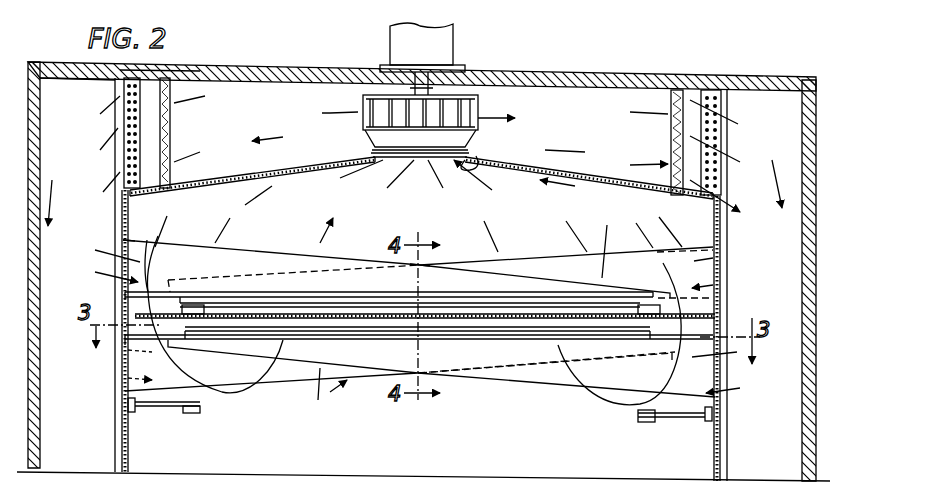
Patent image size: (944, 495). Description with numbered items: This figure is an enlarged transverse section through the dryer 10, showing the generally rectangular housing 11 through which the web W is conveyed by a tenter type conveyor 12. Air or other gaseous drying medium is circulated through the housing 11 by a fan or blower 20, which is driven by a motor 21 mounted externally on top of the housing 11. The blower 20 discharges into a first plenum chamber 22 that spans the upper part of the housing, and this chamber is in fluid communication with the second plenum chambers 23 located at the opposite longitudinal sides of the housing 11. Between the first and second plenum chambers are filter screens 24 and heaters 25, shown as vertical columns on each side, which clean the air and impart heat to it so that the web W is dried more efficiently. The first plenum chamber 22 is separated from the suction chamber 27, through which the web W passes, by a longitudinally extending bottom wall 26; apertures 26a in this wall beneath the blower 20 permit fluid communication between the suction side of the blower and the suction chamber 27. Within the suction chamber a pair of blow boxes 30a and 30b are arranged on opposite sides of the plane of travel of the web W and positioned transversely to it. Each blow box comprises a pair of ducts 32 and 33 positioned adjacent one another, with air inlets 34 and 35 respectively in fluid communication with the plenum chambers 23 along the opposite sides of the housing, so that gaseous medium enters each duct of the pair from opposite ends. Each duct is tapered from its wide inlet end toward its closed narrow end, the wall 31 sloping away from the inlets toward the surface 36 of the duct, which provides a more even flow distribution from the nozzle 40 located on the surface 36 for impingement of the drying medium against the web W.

The dryer 10 is at (740, 72).
The housing 11 is at (590, 72).
The tenter type conveyor 12 is at (180, 292).
The fan or blower 20 is at (365, 122).
The motor 21 is at (430, 53).
The first plenum chamber 22 is at (255, 92).
The second plenum chamber 23 is at (52, 92).
The filter screen 24 is at (172, 146).
The heater 25 is at (128, 118).
The bottom wall 26 is at (222, 176).
The aperture 26a is at (504, 150).
The suction chamber 27 is at (596, 196).
The blow box 30a is at (241, 329).
The blow box 30b is at (600, 250).
The wall 31 is at (340, 258).
The duct 32 is at (270, 246).
The duct 33 is at (686, 240).
The air inlet 34 is at (128, 248).
The air inlet 35 is at (718, 292).
The surface 36 is at (545, 337).
The nozzle 40 is at (380, 305).
The web W is at (446, 312).